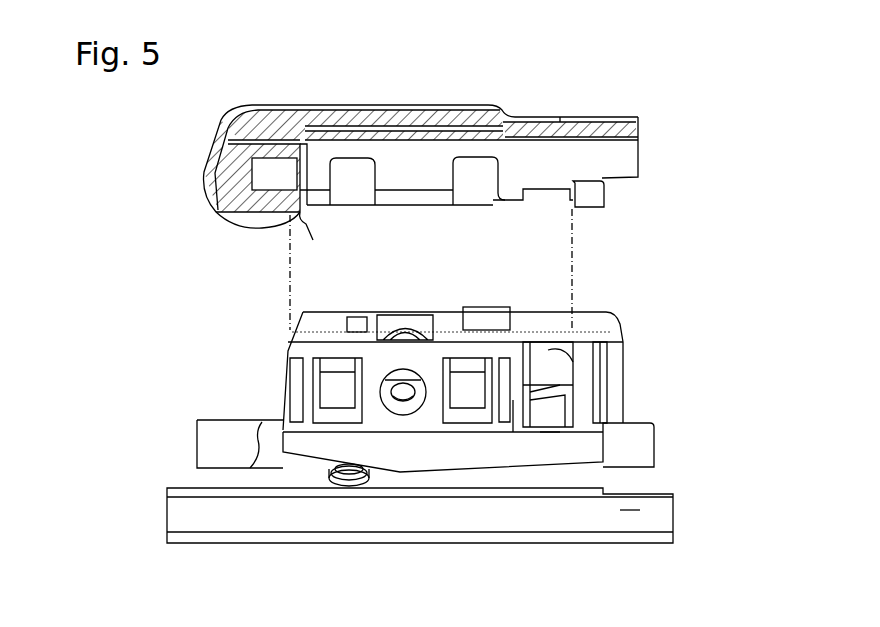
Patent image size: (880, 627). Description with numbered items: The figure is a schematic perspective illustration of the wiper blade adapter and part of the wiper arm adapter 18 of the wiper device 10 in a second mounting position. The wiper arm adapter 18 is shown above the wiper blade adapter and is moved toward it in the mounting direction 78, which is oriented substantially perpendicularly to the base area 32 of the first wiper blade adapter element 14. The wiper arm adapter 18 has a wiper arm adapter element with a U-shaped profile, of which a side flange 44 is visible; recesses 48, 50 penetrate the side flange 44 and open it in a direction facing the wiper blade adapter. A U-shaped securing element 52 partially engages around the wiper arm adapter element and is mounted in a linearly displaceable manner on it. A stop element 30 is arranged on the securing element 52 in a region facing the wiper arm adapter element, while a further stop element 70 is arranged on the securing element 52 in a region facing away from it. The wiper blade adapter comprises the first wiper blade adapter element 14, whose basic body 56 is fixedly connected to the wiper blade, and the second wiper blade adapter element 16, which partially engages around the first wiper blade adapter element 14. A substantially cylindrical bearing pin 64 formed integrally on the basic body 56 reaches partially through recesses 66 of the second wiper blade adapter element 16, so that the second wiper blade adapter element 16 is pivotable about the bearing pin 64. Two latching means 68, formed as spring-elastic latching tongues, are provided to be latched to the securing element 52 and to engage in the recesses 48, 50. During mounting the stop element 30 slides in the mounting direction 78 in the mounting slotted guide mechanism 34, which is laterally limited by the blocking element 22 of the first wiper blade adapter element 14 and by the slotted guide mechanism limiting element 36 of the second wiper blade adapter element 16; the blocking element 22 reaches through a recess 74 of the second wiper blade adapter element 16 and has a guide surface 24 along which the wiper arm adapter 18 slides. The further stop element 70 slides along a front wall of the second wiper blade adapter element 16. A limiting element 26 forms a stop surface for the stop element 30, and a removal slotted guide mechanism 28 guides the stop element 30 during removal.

The wiper device 10 is at (135, 134).
The first wiper blade adapter element 14 is at (668, 486).
The second wiper blade adapter element 16 is at (493, 419).
The wiper arm adapter 18 is at (470, 163).
The blocking element 22 is at (555, 412).
The guide surface 24 is at (550, 390).
The limiting element 26 is at (513, 405).
The removal slotted guide mechanism 28 is at (527, 336).
The stop element 30 is at (604, 196).
The base area 32 is at (256, 467).
The mounting slotted guide mechanism 34 is at (607, 336).
The slotted guide mechanism limiting element 36 is at (563, 362).
The side flange 44 is at (550, 155).
The recess 48 is at (350, 168).
The recess 50 is at (480, 168).
The securing element 52 is at (299, 120).
The basic body 56 is at (628, 518).
The bearing pin 64 is at (408, 406).
The recess 66 is at (392, 424).
The latching means 68 is at (333, 395).
The further stop element 70 is at (313, 240).
The recess 74 is at (548, 434).
The mounting direction 78 is at (143, 250).